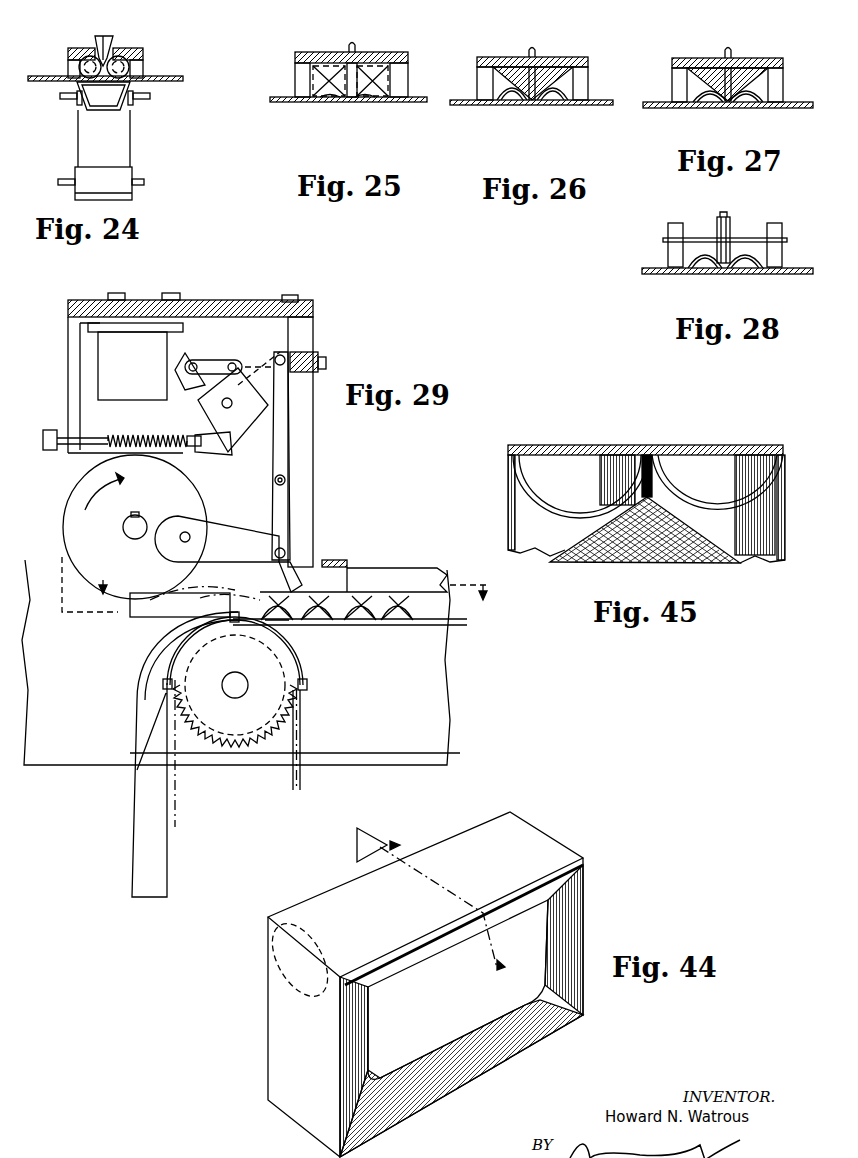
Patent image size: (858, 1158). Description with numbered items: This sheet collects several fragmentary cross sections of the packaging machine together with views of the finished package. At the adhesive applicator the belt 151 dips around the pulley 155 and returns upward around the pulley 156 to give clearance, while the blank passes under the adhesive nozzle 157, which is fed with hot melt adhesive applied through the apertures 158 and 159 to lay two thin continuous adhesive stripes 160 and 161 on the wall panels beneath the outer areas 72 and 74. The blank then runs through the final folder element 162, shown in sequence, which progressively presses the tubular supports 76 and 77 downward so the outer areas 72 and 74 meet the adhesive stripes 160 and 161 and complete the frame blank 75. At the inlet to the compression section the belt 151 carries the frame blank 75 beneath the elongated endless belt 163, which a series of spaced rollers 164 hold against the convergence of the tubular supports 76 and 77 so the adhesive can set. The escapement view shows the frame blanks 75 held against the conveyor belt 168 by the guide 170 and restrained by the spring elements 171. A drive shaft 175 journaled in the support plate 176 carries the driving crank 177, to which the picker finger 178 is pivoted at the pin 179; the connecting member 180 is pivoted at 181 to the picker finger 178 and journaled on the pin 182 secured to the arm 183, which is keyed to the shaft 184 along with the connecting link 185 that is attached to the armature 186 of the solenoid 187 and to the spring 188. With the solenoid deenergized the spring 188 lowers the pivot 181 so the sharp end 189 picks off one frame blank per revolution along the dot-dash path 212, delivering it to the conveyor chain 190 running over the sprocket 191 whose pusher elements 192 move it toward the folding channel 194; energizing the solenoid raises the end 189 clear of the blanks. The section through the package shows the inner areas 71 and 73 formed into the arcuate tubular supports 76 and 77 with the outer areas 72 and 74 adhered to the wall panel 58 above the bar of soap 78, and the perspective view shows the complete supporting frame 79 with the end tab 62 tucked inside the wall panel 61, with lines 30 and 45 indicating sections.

In FIG. 29, the section line 30 is at (277, 590).
In FIG. 44, the section line 45 is at (444, 900).
In FIG. 45, the wall panel 58 is at (642, 447).
In FIG. 44, the wall panel 58 is at (515, 858).
In FIG. 44, the wall panel 61 is at (302, 1014).
In FIG. 44, the end tab 62 is at (270, 927).
In FIG. 45, the inner area 71 is at (690, 508).
In FIG. 25, the outer area 72 is at (364, 92).
In FIG. 45, the outer area 72 is at (685, 455).
In FIG. 45, the inner area 73 is at (545, 505).
In FIG. 25, the outer area 74 is at (318, 100).
In FIG. 45, the outer area 74 is at (540, 455).
In FIG. 28, the frame blank 75 is at (688, 255).
In FIG. 29, the frame blank 75 is at (360, 600).
In FIG. 25, the tubular support 76 is at (390, 87).
In FIG. 26, the tubular support 76 is at (570, 83).
In FIG. 27, the tubular support 76 is at (764, 85).
In FIG. 28, the tubular support 76 is at (750, 245).
In FIG. 45, the tubular support 76 is at (737, 523).
In FIG. 44, the tubular support 76 is at (563, 917).
In FIG. 25, the tubular support 77 is at (310, 75).
In FIG. 26, the tubular support 77 is at (495, 80).
In FIG. 27, the tubular support 77 is at (690, 82).
In FIG. 28, the tubular support 77 is at (712, 248).
In FIG. 45, the tubular support 77 is at (540, 515).
In FIG. 45, the bar of soap 78 is at (610, 557).
In FIG. 44, the bar of soap 78 is at (417, 1013).
In FIG. 44, the supporting frame 79 is at (552, 821).
In FIG. 24, the belt 151 is at (115, 129).
In FIG. 25, the belt 151 is at (350, 103).
In FIG. 26, the belt 151 is at (532, 106).
In FIG. 27, the belt 151 is at (722, 110).
In FIG. 28, the belt 151 is at (718, 277).
In FIG. 24, the pulley 155 is at (88, 173).
In FIG. 24, the pulley 156 is at (77, 103).
In FIG. 24, the adhesive nozzle 157 is at (112, 44).
In FIG. 24, the aperture 158 is at (80, 67).
In FIG. 24, the aperture 159 is at (128, 67).
In FIG. 24, the adhesive stripe 160 is at (68, 96).
In FIG. 25, the adhesive stripe 160 is at (340, 103).
In FIG. 26, the adhesive stripe 160 is at (510, 104).
In FIG. 24, the adhesive stripe 161 is at (140, 103).
In FIG. 25, the adhesive stripe 161 is at (367, 103).
In FIG. 26, the adhesive stripe 161 is at (550, 104).
In FIG. 25, the final folder element 162 is at (366, 57).
In FIG. 26, the final folder element 162 is at (548, 62).
In FIG. 27, the final folder element 162 is at (745, 65).
In FIG. 25, the endless belt 163 is at (350, 45).
In FIG. 26, the endless belt 163 is at (531, 50).
In FIG. 27, the endless belt 163 is at (724, 50).
In FIG. 28, the endless belt 163 is at (720, 215).
In FIG. 25, the roller 164 is at (346, 50).
In FIG. 26, the roller 164 is at (528, 56).
In FIG. 27, the roller 164 is at (722, 58).
In FIG. 28, the roller 164 is at (733, 232).
In FIG. 29, the conveyor belt 168 is at (373, 624).
In FIG. 29, the guide 170 is at (437, 572).
In FIG. 29, the spring element 171 is at (303, 565).
In FIG. 29, the drive shaft 175 is at (125, 530).
In FIG. 29, the support plate 176 is at (68, 362).
In FIG. 29, the driving crank 177 is at (73, 520).
In FIG. 29, the picker finger 178 is at (223, 537).
In FIG. 29, the pin 179 is at (182, 541).
In FIG. 29, the connecting member 180 is at (283, 443).
In FIG. 29, the pivot 181 is at (285, 552).
In FIG. 29, the pin 182 is at (290, 358).
In FIG. 29, the arm 183 is at (260, 367).
In FIG. 29, the shaft 184 is at (222, 405).
In FIG. 29, the connecting link 185 is at (230, 442).
In FIG. 29, the armature 186 is at (172, 360).
In FIG. 29, the solenoid 187 is at (125, 340).
In FIG. 29, the spring 188 is at (130, 435).
In FIG. 29, the sharp end 189 is at (330, 568).
In FIG. 29, the conveyor chain 190 is at (300, 733).
In FIG. 29, the sprocket 191 is at (268, 662).
In FIG. 29, the pusher element 192 is at (193, 620).
In FIG. 29, the folding channel 194 is at (142, 823).
In FIG. 29, the dot-dash line 212 is at (205, 590).